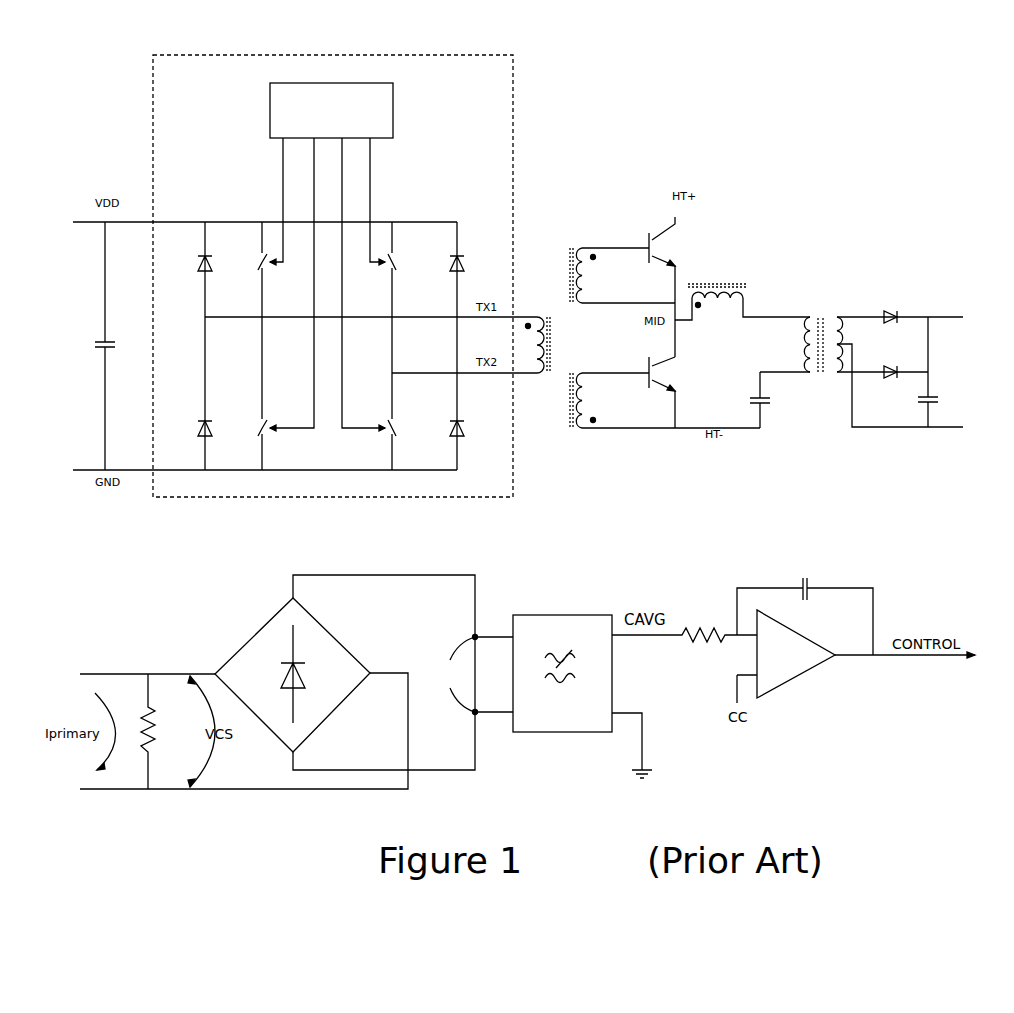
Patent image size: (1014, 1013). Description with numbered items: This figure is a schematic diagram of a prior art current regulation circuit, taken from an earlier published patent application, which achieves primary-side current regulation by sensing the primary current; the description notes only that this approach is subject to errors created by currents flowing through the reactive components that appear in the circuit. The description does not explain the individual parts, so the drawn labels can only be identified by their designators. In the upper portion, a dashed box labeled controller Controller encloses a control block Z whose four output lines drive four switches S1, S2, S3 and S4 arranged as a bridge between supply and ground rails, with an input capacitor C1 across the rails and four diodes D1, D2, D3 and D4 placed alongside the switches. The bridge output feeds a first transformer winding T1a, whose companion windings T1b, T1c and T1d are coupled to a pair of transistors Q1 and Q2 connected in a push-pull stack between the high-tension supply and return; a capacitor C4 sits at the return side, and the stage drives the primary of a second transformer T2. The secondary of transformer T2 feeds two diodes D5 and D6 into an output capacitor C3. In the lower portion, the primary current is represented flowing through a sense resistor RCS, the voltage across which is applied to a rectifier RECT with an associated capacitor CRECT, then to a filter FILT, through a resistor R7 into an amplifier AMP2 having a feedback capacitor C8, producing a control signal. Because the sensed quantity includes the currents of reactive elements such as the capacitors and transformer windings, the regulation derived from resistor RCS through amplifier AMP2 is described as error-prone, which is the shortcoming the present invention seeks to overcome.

The controller Controller is at (333, 263).
The control logic block Z is at (331, 257).
The supply capacitor C1 is at (115, 346).
The diode D1 is at (195, 346).
The diode D2 is at (465, 346).
The diode D3 is at (195, 429).
The diode D4 is at (465, 429).
The switch S1 is at (252, 269).
The switch S2 is at (402, 269).
The switch S3 is at (252, 393).
The switch S4 is at (402, 393).
The transformer T1 primary winding T1a is at (549, 345).
The transformer T1 winding b T1b is at (622, 275).
The transformer T1 winding c T1c is at (665, 400).
The transformer T1 winding d T1d is at (742, 295).
The transistor Q1 is at (672, 287).
The transistor Q2 is at (672, 392).
The capacitor C4 is at (770, 400).
The transformer T2 is at (861, 361).
The diode D5 is at (890, 325).
The diode D6 is at (890, 380).
The capacitor C3 is at (937, 372).
The current sense resistor RCS is at (163, 731).
The rectifier RECT is at (345, 672).
The rectifier capacitor CRECT is at (469, 675).
The filter FILT is at (582, 686).
The resistor R7 is at (684, 624).
The capacitor C8 is at (805, 607).
The amplifier AMP2 is at (856, 656).